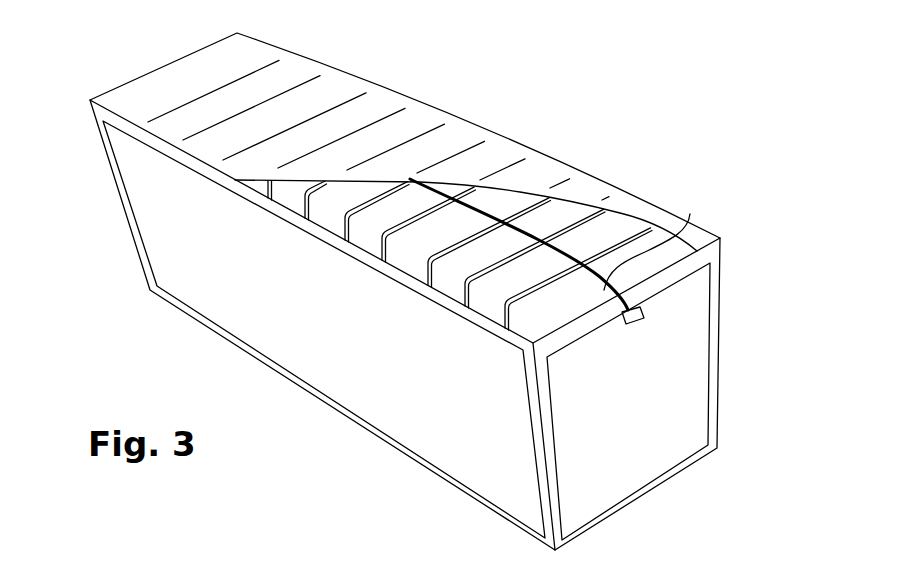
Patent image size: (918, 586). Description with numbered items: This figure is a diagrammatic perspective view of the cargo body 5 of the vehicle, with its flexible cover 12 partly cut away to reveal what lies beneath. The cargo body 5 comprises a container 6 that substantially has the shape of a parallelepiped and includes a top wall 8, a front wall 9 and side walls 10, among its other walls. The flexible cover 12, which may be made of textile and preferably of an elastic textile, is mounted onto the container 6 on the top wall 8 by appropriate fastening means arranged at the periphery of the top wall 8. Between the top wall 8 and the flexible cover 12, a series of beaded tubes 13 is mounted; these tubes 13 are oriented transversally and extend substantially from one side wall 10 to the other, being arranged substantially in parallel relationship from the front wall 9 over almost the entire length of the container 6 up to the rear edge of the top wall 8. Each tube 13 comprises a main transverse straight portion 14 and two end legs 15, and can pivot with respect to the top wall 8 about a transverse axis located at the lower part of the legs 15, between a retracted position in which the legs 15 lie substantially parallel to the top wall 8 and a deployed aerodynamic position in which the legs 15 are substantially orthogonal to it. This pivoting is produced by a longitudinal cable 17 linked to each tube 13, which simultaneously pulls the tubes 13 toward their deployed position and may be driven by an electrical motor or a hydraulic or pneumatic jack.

The cargo body 5 is at (606, 98).
The container 6 is at (733, 314).
The top wall 8 is at (540, 310).
The front wall 9 is at (680, 393).
The side wall 10 is at (165, 220).
The flexible cover 12 is at (320, 100).
The beaded tube 13 is at (482, 283).
The main transverse straight portion 14 is at (375, 203).
The end leg 15 is at (370, 249).
The longitudinal cable 17 is at (690, 216).